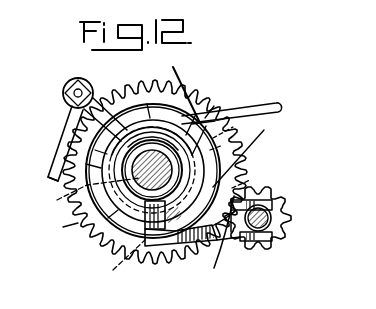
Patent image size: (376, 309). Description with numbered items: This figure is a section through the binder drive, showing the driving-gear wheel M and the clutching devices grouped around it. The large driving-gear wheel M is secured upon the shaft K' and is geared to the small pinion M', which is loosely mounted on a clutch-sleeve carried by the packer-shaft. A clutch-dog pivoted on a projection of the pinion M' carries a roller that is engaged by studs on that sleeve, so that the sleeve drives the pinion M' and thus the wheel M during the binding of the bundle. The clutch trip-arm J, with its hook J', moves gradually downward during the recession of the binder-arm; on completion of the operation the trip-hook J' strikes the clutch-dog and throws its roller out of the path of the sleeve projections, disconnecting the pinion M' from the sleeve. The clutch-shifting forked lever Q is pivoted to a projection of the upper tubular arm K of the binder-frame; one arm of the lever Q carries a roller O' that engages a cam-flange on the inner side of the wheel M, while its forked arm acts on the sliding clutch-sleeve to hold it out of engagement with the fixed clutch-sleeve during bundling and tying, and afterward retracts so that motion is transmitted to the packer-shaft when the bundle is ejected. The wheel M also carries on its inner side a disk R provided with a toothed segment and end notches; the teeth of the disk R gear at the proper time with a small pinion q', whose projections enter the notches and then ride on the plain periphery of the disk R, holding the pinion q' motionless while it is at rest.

The driving-gear wheel M is at (188, 82).
The pinion M′ is at (292, 213).
The clutch trip-arm J is at (180, 87).
The trip-hook J′ is at (284, 107).
The upper tubular arm K is at (77, 153).
The shaft K′ is at (86, 194).
The disk R is at (251, 157).
The pinion q′ is at (250, 180).
The roller O′ is at (157, 246).
The clutch-shifting forked lever Q is at (218, 248).